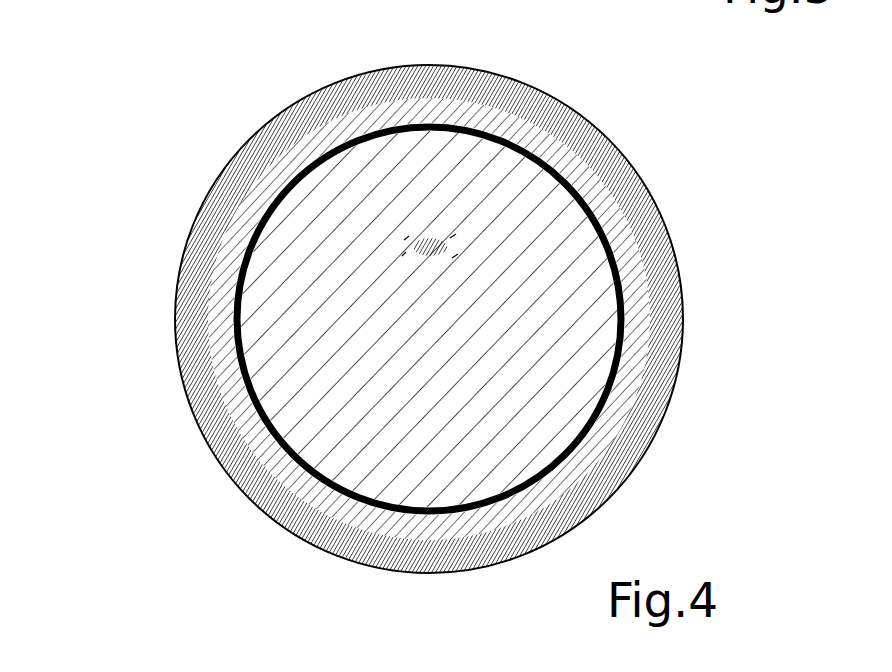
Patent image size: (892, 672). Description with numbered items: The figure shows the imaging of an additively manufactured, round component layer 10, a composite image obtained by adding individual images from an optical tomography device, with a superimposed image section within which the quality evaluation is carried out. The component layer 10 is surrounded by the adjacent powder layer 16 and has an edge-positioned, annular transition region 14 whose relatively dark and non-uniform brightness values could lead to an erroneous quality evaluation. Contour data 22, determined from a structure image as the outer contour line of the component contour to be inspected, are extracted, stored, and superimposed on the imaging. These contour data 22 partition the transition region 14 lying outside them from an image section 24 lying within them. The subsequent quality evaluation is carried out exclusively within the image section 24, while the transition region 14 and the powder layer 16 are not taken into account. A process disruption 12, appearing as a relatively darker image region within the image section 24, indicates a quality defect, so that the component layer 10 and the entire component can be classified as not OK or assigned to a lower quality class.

The component layer 10 is at (651, 116).
The process disruption 12 is at (429, 263).
The transition region 14 is at (347, 104).
The powder layer 16 is at (131, 222).
The contour data 22 is at (623, 265).
The image section 24 is at (506, 466).